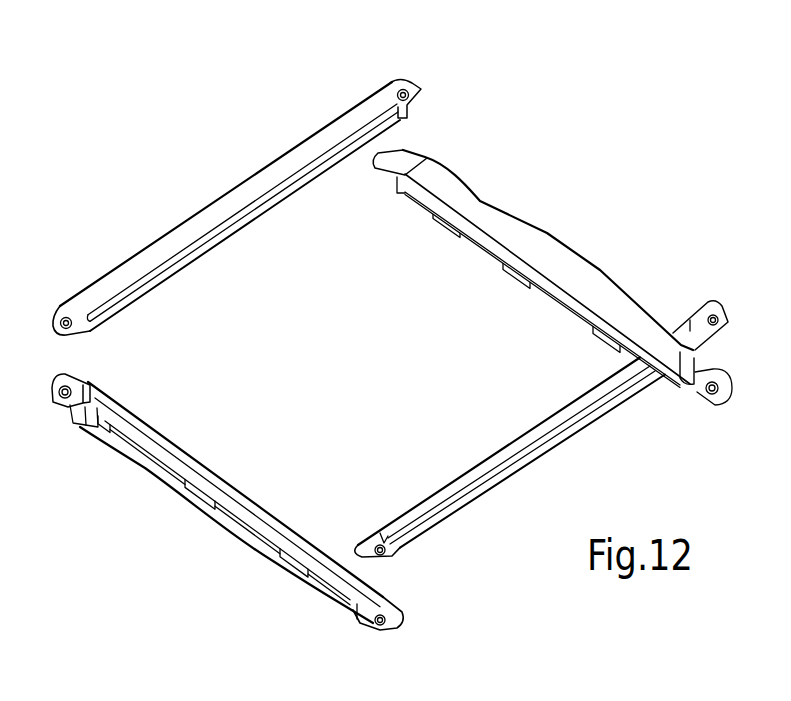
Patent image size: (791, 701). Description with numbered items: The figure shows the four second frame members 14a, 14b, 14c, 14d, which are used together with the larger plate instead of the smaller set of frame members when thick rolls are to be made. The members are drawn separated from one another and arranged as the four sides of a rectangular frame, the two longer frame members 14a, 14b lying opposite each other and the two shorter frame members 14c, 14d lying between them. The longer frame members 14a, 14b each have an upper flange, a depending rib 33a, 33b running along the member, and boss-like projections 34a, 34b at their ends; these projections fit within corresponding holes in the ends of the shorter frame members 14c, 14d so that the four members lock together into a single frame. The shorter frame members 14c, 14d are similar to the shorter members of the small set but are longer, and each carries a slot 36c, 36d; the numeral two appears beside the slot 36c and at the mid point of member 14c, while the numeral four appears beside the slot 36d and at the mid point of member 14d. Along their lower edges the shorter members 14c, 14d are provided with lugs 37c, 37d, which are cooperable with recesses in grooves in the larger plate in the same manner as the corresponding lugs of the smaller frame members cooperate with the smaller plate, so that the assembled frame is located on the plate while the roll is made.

The second frame member 14a is at (587, 418).
The second frame member 14b is at (232, 192).
The second frame member 14c is at (548, 238).
The second frame member 14d is at (172, 447).
The depending rib 33a is at (573, 410).
The depending rib 33b is at (293, 197).
The boss-like projection 34a is at (722, 322).
The boss-like projection 34b is at (423, 88).
The slot 36c is at (700, 360).
The slot 36d is at (78, 428).
The lug 37c is at (503, 277).
The lug 37d is at (107, 412).